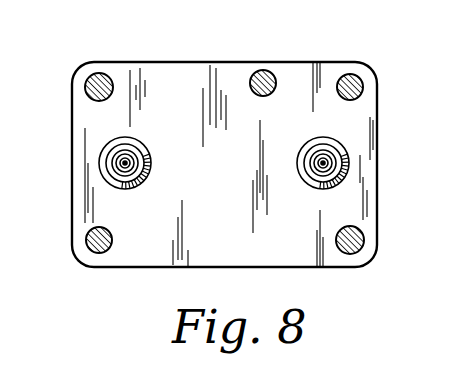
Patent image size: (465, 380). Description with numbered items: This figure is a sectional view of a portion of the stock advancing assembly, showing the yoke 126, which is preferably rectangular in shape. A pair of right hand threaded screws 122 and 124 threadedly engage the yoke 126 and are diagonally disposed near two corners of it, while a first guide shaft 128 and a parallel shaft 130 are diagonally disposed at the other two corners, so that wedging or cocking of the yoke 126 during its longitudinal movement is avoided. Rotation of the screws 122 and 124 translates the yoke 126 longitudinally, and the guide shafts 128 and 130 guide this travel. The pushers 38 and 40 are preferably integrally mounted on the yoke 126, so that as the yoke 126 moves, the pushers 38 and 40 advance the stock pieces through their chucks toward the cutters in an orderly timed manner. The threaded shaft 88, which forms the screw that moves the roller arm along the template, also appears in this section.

The yoke 126 is at (210, 76).
The shaft 88 is at (268, 72).
The screw 122 is at (362, 84).
The first guide shaft 128 is at (92, 90).
The screw 124 is at (93, 246).
The shaft 130 is at (362, 248).
The pusher 40 is at (131, 172).
The pusher 38 is at (316, 172).